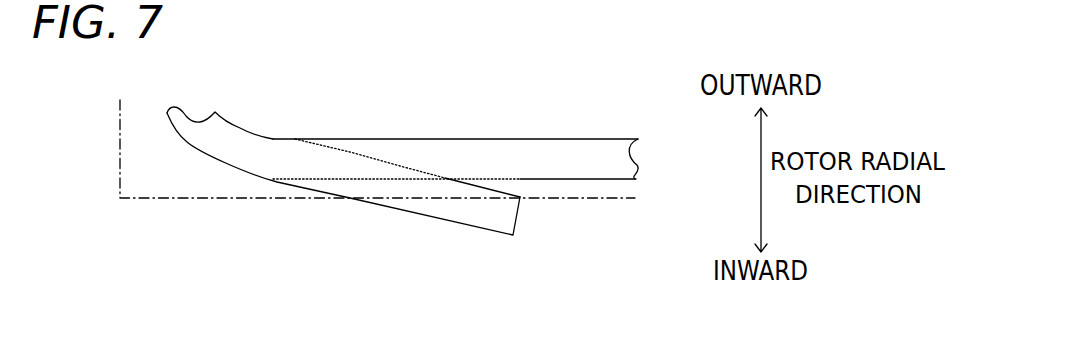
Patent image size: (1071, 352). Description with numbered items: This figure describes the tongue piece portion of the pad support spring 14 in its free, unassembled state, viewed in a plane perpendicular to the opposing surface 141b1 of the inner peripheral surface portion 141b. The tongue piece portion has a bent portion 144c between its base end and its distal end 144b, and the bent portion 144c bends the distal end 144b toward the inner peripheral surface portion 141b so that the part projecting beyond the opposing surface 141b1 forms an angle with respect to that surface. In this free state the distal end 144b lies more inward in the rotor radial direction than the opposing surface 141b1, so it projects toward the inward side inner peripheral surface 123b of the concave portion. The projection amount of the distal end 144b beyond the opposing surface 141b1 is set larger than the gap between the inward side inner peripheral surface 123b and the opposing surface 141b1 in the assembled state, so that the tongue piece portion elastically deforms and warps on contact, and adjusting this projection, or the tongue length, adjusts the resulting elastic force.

The pad support spring 14 is at (533, 95).
The bent portion 144c is at (235, 125).
The inner peripheral surface portion 141b is at (610, 138).
The opposing surface 141b1 is at (611, 180).
The distal end 144b is at (506, 220).
The inward side inner peripheral surface 123b is at (193, 190).